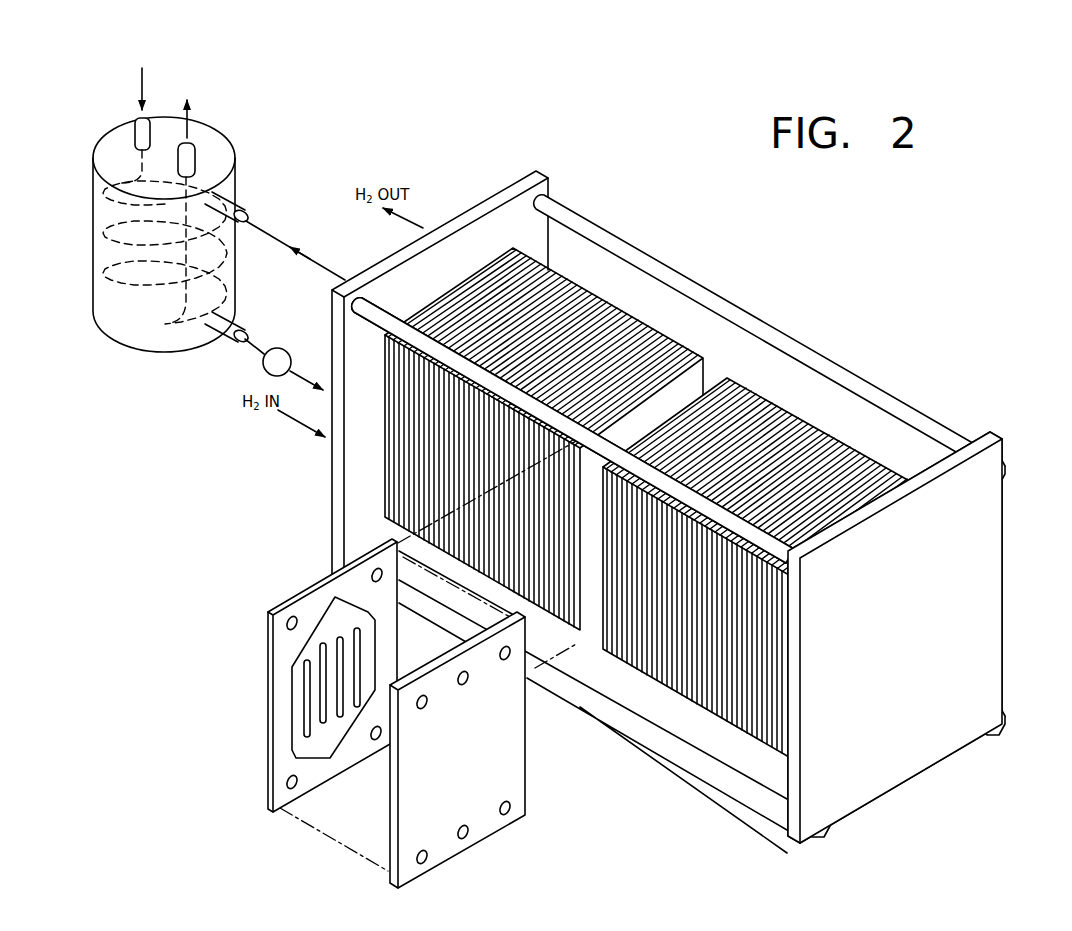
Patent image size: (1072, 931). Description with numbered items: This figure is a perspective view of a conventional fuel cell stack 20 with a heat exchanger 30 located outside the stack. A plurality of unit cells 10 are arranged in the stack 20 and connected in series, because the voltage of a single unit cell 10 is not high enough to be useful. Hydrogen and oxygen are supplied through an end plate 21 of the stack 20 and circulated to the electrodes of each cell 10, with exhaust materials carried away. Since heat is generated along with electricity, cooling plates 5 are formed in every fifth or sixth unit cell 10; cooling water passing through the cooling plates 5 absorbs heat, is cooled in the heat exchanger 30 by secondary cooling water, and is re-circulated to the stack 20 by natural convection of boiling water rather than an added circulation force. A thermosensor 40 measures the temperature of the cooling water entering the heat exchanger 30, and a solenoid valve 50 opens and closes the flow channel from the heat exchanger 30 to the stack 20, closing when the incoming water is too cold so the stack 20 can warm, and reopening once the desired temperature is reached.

The cooling plate 5 is at (573, 288).
The unit cell 10 is at (610, 298).
The stack 20 is at (592, 738).
The end plate 21 is at (332, 496).
The heat exchanger 30 is at (98, 350).
The thermosensor 40 is at (275, 234).
The solenoid valve 50 is at (263, 363).